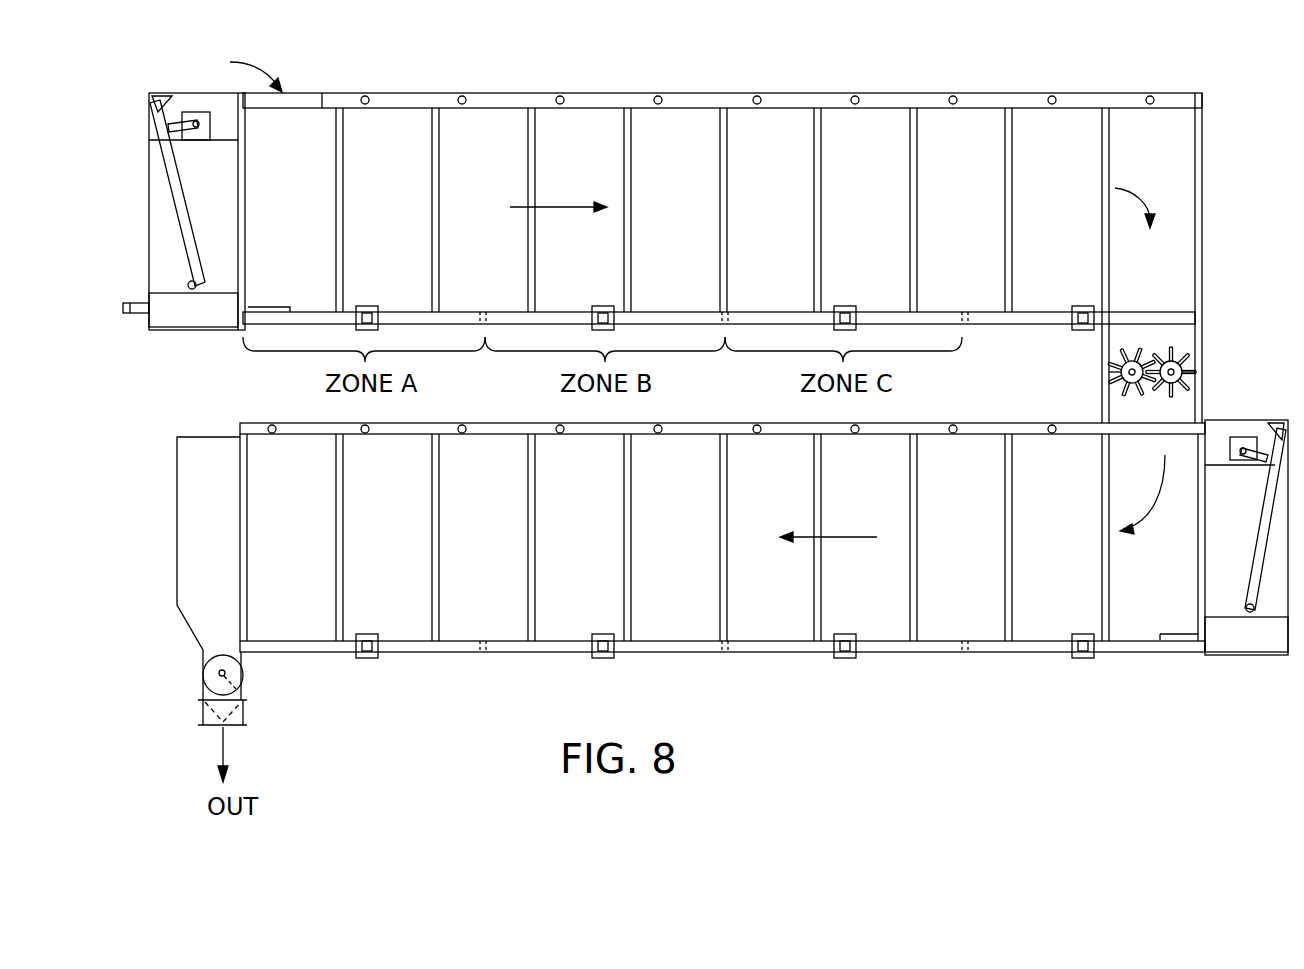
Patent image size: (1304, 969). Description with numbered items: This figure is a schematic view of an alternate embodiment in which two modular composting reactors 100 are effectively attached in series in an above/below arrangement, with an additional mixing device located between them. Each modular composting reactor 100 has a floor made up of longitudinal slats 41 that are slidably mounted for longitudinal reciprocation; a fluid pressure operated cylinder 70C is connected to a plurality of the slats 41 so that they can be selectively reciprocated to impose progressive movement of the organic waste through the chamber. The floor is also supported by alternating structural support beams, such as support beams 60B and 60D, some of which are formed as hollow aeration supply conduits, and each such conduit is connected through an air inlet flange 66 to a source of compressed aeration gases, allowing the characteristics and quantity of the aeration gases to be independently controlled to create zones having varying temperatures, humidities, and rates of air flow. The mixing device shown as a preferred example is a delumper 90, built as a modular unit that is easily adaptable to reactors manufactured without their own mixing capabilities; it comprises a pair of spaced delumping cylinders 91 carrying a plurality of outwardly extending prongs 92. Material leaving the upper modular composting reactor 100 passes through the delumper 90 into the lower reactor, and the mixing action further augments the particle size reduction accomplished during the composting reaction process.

The modular composting reactor 100 is at (750, 84).
The longitudinal slat 41 is at (288, 310).
The air inlet flange 66 is at (367, 306).
The structural support beam 60B is at (484, 312).
The structural support beam 60D is at (730, 312).
The cylinder 70C is at (123, 308).
The delumper 90 is at (1152, 341).
The delumping cylinder 91 is at (1115, 373).
The prong 92 is at (1170, 352).